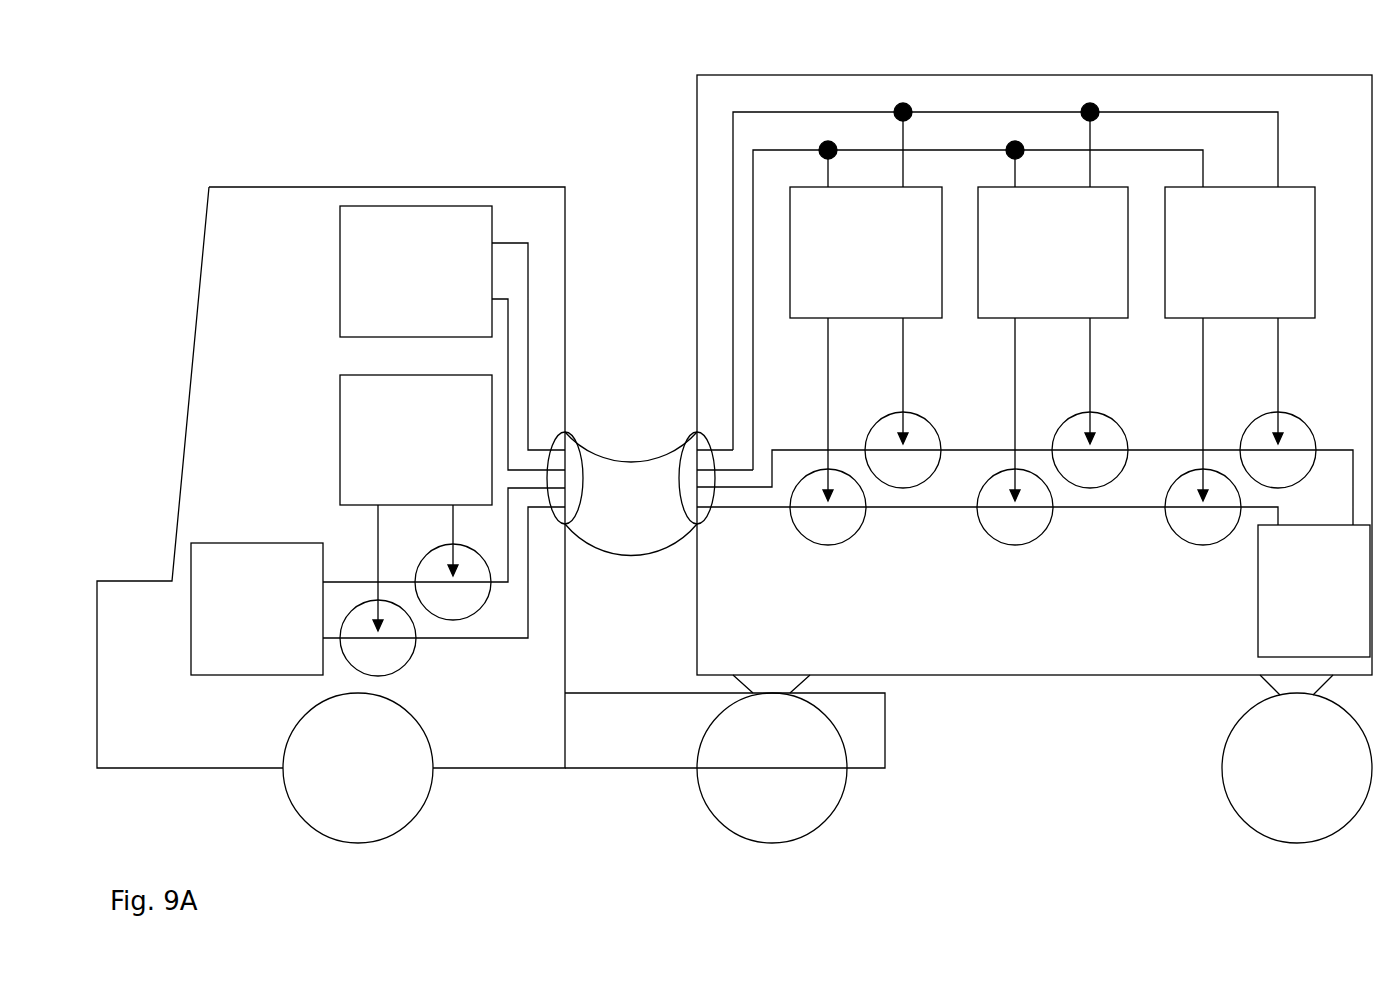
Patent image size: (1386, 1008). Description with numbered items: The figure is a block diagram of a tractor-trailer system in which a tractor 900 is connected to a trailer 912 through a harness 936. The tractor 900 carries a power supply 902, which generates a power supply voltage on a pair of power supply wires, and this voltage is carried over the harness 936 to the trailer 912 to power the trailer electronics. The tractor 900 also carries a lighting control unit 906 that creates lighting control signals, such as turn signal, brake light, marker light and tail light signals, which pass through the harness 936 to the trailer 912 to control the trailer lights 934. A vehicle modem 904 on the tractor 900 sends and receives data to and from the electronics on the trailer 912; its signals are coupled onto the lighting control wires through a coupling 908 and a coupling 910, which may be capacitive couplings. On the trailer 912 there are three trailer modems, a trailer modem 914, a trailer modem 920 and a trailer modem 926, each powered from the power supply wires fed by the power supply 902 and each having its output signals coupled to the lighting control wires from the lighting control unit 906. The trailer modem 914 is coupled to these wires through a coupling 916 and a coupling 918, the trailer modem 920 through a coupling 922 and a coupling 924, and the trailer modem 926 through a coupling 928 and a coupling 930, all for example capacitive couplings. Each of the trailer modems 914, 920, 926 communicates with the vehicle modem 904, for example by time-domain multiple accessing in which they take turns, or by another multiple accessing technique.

The tractor 900 is at (277, 187).
The power supply 902 is at (340, 240).
The vehicle modem 904 is at (340, 405).
The lighting control unit 906 is at (255, 543).
The coupling 908 is at (405, 665).
The coupling 910 is at (478, 612).
The trailer 912 is at (783, 75).
The trailer modem 914 is at (873, 318).
The coupling 916 is at (933, 430).
The coupling 918 is at (815, 545).
The trailer modem 920 is at (1060, 318).
The coupling 922 is at (1120, 430).
The coupling 924 is at (1002, 545).
The trailer modem 926 is at (1248, 318).
The coupling 928 is at (1308, 430).
The coupling 930 is at (1170, 530).
The trailer lights 934 is at (1258, 598).
The harness 936 is at (615, 553).